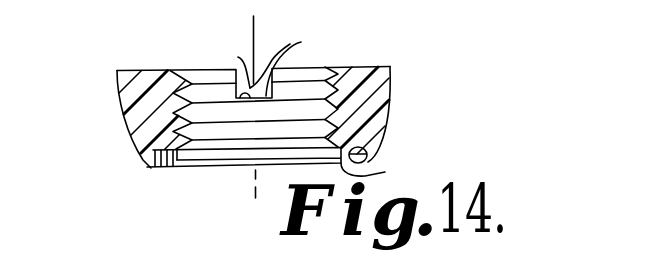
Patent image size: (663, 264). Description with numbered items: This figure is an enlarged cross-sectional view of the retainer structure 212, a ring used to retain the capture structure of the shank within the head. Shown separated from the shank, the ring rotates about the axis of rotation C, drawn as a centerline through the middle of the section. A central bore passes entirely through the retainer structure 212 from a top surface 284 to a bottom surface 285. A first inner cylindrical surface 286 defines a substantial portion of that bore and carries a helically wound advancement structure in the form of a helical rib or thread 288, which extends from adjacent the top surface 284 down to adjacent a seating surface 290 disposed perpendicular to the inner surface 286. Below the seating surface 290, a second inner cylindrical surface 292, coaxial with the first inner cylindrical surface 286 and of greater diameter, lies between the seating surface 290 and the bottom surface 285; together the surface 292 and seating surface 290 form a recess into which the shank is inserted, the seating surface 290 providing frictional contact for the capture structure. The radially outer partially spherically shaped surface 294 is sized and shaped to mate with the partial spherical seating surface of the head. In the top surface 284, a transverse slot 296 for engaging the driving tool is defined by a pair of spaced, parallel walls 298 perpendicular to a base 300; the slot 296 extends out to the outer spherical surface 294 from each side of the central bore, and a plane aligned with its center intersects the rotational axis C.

The retainer structure 212 is at (380, 99).
The top surface 284 is at (136, 70).
The bottom surface 285 is at (151, 168).
The first inner cylindrical surface 286 is at (329, 68).
The helical rib or thread 288 is at (195, 80).
The seating surface 290 is at (372, 175).
The second inner cylindrical surface 292 is at (367, 153).
The radially outer partially spherically shaped surface 294 is at (391, 67).
The transverse slot 296 is at (238, 57).
The spaced, parallel walls 298 is at (290, 44).
The base 300 is at (241, 95).
The axis of rotation C is at (256, 24).